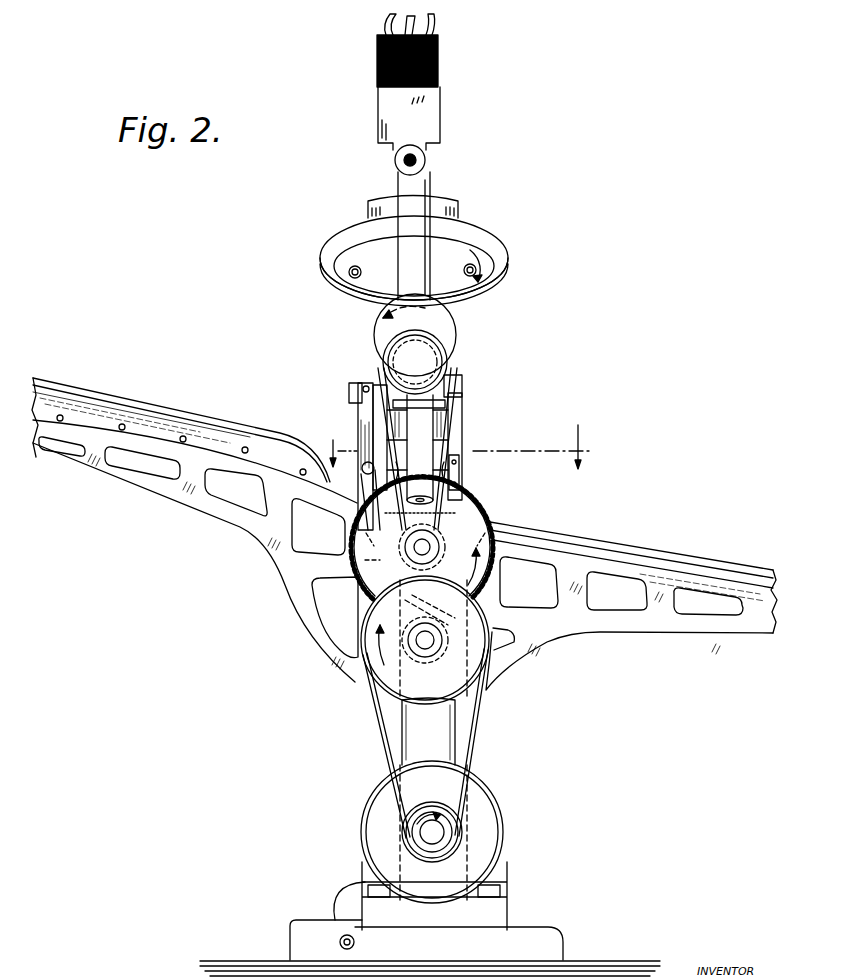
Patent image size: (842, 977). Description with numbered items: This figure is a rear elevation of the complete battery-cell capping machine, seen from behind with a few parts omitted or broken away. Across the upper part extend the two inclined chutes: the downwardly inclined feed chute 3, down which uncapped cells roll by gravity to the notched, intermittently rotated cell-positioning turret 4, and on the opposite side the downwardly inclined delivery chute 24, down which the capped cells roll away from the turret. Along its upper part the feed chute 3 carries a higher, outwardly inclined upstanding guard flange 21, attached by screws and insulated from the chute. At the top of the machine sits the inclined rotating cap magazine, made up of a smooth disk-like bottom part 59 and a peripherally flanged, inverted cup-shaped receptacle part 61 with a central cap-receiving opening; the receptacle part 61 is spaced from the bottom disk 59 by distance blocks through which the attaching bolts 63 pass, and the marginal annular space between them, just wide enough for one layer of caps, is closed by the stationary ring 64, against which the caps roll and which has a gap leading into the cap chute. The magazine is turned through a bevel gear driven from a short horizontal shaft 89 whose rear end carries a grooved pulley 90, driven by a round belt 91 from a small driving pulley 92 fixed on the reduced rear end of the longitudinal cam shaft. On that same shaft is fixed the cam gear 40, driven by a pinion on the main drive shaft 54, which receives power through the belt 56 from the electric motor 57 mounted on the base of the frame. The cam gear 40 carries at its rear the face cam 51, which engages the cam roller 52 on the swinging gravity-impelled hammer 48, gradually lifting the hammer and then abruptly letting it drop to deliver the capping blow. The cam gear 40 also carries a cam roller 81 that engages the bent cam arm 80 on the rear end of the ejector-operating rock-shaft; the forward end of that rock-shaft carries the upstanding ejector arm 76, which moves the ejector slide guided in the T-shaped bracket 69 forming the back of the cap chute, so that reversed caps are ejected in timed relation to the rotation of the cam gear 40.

The feed chute 3 is at (251, 469).
The cell-positioning turret 4 is at (457, 447).
The guard flange 21 is at (155, 410).
The delivery chute 24 is at (688, 562).
The cam gear 40 is at (454, 538).
The hammer 48 is at (432, 420).
The face cam 51 is at (480, 503).
The cam roller 52 is at (452, 473).
The main drive shaft 54 is at (424, 657).
The belt 56 is at (486, 728).
The electric motor 57 is at (498, 827).
The bottom disk of cap magazine 59 is at (414, 266).
The receptacle part of cap magazine 61 is at (452, 204).
The attaching bolts 63 is at (412, 276).
The stationary ring 64 is at (500, 274).
The T-shaped bracket 69 is at (355, 383).
The ejector arm 76 is at (350, 406).
The cam arm 80 is at (361, 474).
The cam roller 81 is at (425, 640).
The short horizontal shaft 89 is at (456, 342).
The grooved pulley 90 is at (452, 334).
The round belt 91 is at (462, 388).
The small driving pulley 92 is at (431, 555).